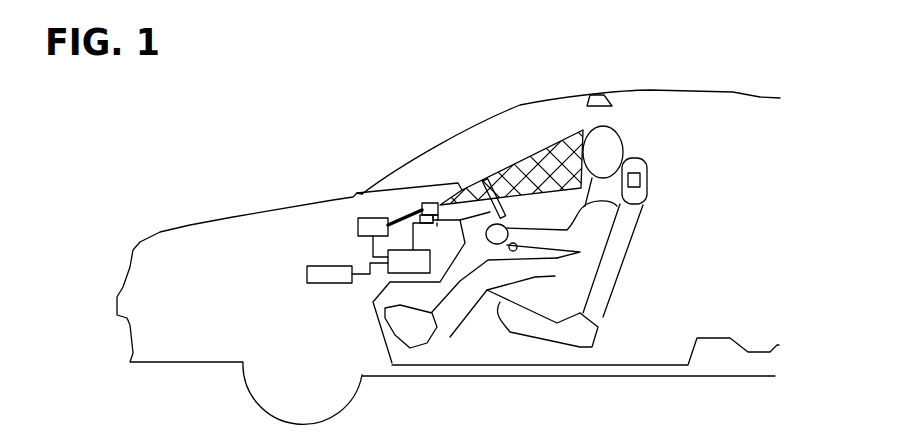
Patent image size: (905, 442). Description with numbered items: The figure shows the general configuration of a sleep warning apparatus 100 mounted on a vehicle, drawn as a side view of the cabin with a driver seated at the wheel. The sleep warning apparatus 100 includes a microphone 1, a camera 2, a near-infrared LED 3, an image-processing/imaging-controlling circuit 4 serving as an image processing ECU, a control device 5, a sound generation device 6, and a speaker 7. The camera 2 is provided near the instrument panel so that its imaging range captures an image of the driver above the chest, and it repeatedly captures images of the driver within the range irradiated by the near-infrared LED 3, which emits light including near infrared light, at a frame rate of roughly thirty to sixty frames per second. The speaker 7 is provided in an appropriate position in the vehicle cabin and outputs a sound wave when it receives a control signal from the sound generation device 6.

The sleep warning apparatus 100 is at (763, 169).
The microphone 1 is at (640, 180).
The camera 2 is at (437, 225).
The near-infrared LED 3 is at (428, 204).
The image-processing/imaging-controlling circuit 4 is at (372, 218).
The control device 5 is at (400, 266).
The sound generation device 6 is at (307, 272).
The speaker 7 is at (584, 95).